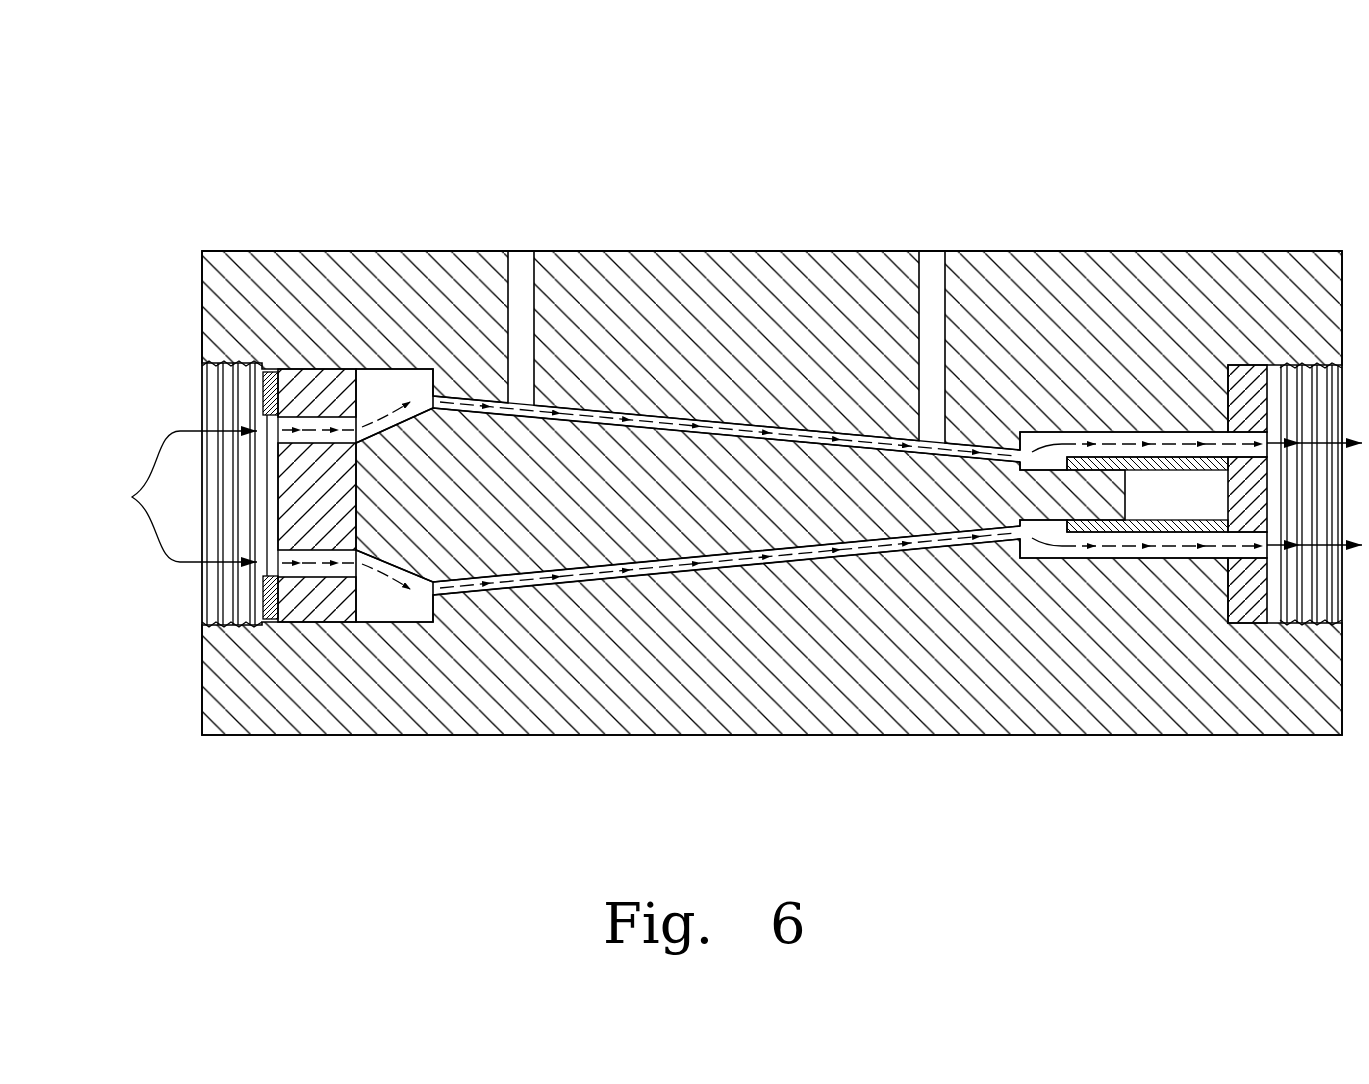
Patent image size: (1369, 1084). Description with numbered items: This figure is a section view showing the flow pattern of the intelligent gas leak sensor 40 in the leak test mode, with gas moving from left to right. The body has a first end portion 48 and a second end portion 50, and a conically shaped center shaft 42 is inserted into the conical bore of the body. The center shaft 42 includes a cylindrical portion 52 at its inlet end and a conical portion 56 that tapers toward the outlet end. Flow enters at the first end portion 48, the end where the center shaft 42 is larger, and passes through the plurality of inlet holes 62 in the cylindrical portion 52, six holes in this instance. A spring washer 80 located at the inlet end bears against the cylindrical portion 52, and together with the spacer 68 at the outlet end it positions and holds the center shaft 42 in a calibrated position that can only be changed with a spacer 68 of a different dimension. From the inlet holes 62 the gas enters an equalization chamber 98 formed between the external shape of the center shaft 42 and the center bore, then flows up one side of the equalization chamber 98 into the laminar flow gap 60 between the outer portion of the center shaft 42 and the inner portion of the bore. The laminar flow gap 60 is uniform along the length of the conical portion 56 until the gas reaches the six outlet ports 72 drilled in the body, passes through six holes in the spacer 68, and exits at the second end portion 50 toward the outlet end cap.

The intelligent gas leak sensor 40 is at (1152, 166).
The center shaft 42 is at (567, 453).
The first end portion 48 is at (222, 266).
The second end portion 50 is at (1294, 307).
The cylindrical portion 52 is at (292, 598).
The conical portion 56 is at (645, 472).
The laminar flow gap 60 is at (797, 562).
The inlet holes 62 is at (175, 496).
The spacer 68 is at (1230, 600).
The outlet ports 72 is at (1100, 552).
The spring washer 80 is at (262, 400).
The equalization chamber 98 is at (373, 598).